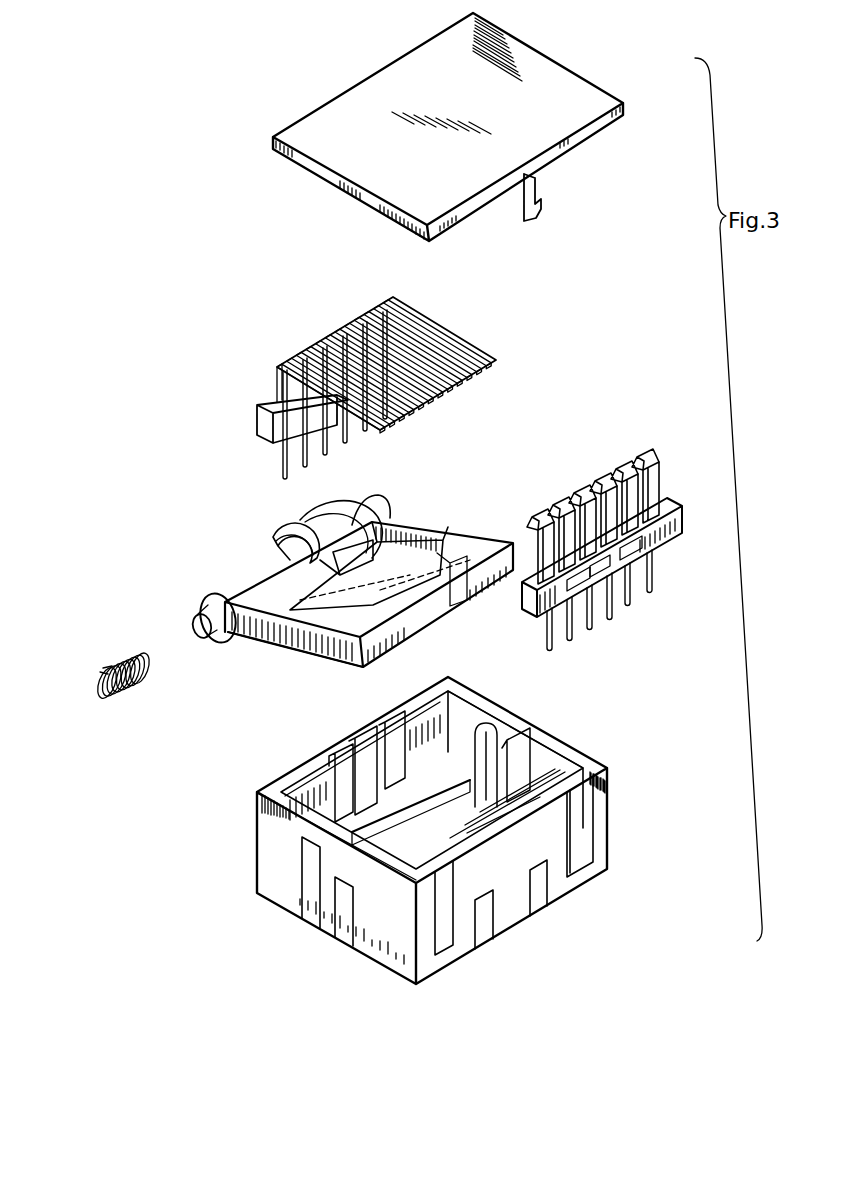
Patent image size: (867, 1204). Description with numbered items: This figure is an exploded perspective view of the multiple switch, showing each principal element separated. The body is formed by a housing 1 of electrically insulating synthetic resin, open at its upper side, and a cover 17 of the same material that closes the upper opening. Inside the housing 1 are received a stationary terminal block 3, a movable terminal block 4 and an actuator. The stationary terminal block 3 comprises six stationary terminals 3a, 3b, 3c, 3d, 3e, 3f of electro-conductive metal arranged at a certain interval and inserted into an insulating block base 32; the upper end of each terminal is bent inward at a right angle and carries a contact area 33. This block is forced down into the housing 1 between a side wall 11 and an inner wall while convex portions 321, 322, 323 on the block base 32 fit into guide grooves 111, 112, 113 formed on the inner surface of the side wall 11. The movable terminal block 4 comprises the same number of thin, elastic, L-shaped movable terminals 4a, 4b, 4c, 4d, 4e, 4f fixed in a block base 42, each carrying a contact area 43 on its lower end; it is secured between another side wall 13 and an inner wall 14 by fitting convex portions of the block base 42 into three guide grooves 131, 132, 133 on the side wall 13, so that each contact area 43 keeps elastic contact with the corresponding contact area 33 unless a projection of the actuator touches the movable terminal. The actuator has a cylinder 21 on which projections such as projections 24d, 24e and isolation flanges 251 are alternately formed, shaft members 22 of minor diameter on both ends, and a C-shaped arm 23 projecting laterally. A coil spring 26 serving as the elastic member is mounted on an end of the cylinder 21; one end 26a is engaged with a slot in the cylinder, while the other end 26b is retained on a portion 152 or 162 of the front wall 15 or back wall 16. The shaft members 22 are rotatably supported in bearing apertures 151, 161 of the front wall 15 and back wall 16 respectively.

The housing 1 is at (435, 833).
The side wall 11 is at (470, 877).
The guide groove 111 is at (477, 840).
The guide groove 112 is at (503, 815).
The guide groove 113 is at (527, 802).
The side wall 13 is at (303, 758).
The guide groove 131 is at (340, 752).
The guide groove 132 is at (365, 737).
The guide groove 133 is at (393, 722).
The inner wall 14 is at (435, 770).
The front wall 15 is at (270, 842).
The bearing aperture 151 is at (320, 910).
The spring retaining portion 152 is at (323, 822).
The back wall 16 is at (553, 742).
The bearing aperture 161 is at (530, 787).
The spring retaining portion 162 is at (487, 725).
The cover 17 is at (528, 62).
The cylinder 21 is at (328, 570).
The shaft member 22 is at (197, 617).
The C-shaped arm 23 is at (335, 622).
The projection 24d is at (287, 527).
The projection 24e is at (350, 540).
The isolation flange 251 is at (275, 538).
The coil spring 26 is at (119, 652).
The spring end 26a is at (105, 663).
The other end of the coil spring 26b is at (103, 668).
The stationary terminal block 3 is at (614, 514).
The stationary terminal 3a is at (543, 517).
The stationary terminal 3b is at (568, 498).
The stationary terminal 3c is at (590, 487).
The stationary terminal 3d is at (605, 480).
The stationary terminal 3e is at (627, 470).
The stationary terminal 3f is at (650, 467).
The block base 32 is at (667, 500).
The contact area 33 is at (553, 512).
The convex portion 321 is at (590, 588).
The convex portion 322 is at (622, 577).
The convex portion 323 is at (650, 558).
The movable terminal block 4 is at (346, 356).
The movable terminal 4a is at (290, 358).
The movable terminal 4b is at (310, 345).
The movable terminal 4c is at (333, 338).
The movable terminal 4d is at (352, 328).
The movable terminal 4e is at (370, 315).
The movable terminal 4f is at (390, 300).
The block base 42 is at (257, 422).
The contact area 43 is at (394, 416).